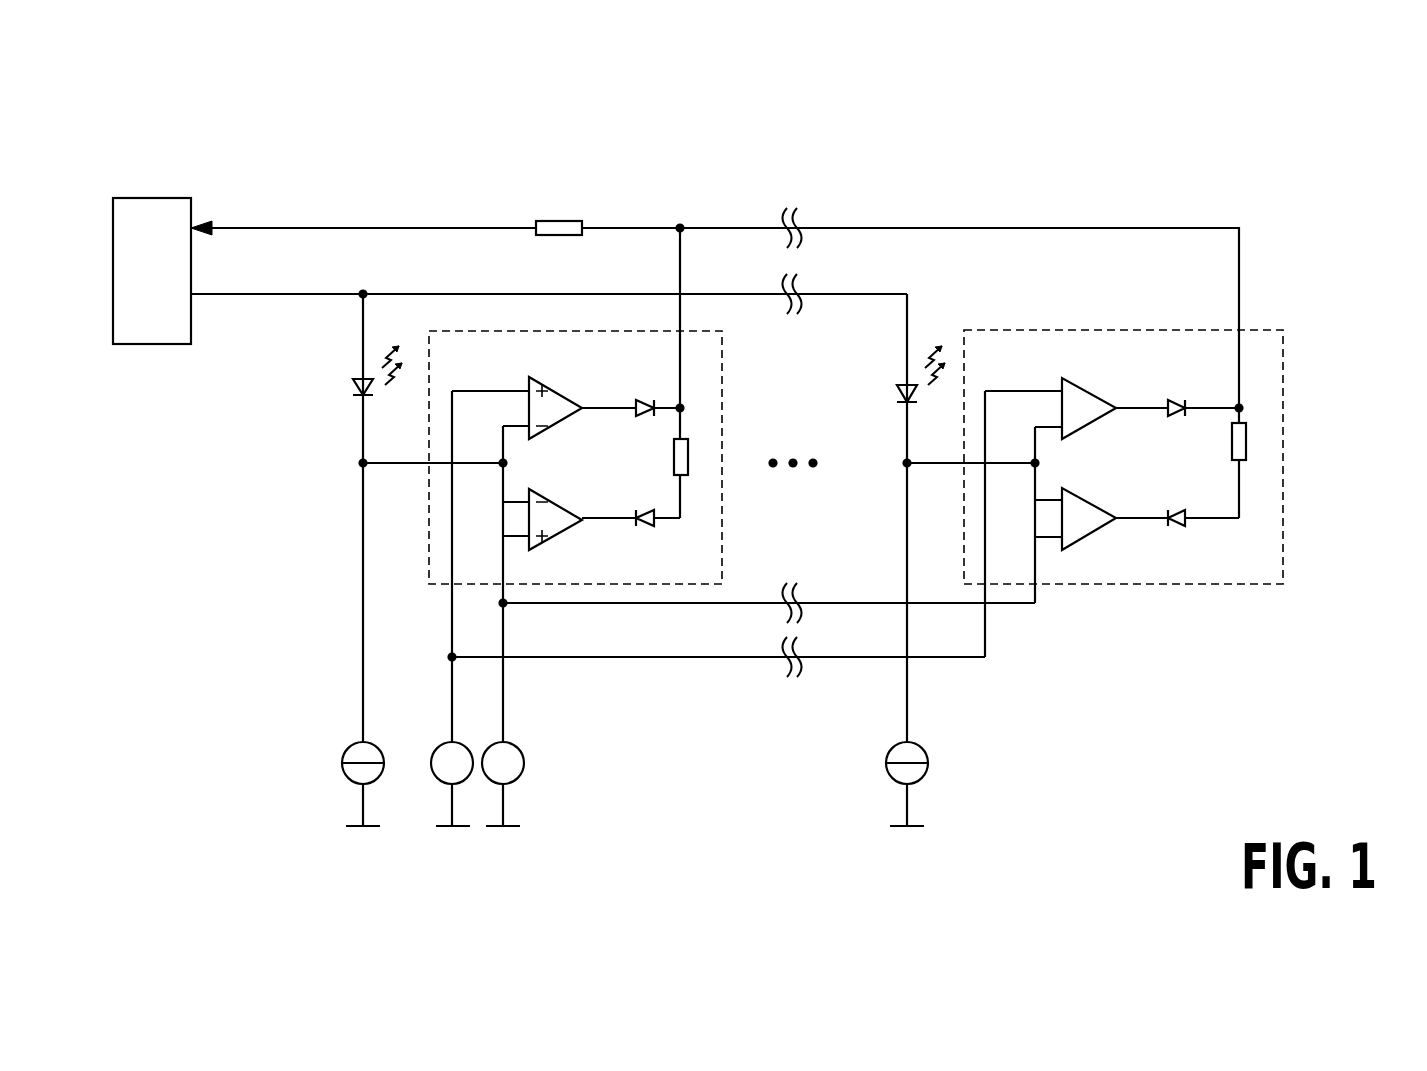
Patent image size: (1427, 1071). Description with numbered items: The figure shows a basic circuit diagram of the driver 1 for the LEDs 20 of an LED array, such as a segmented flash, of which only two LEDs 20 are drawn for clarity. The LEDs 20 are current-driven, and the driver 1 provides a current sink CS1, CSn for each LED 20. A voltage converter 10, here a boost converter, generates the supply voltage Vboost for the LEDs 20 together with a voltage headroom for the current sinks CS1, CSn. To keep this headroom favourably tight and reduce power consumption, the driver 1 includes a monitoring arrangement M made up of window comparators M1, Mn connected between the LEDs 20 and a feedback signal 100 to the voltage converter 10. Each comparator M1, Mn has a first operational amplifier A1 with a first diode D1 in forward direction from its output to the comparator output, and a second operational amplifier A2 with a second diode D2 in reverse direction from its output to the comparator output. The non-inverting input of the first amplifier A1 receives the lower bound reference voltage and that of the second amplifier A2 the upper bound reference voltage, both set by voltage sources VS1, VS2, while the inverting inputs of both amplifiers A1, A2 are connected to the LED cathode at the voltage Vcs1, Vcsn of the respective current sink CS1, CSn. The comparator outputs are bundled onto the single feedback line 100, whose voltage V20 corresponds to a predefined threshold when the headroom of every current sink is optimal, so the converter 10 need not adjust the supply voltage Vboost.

The driver 1 is at (1282, 196).
The voltage converter 10 is at (176, 198).
The LED 20 is at (355, 386).
The feedback signal 100 is at (478, 228).
The first operational amplifier A1 is at (557, 386).
The second operational amplifier A2 is at (557, 535).
The first diode D1 is at (648, 398).
The second diode D2 is at (645, 524).
The window comparator M1 is at (616, 457).
The window comparator Mn is at (1171, 493).
The monitoring arrangement M is at (1055, 652).
The current sink CS1 is at (346, 748).
The current sink CSn is at (924, 748).
The voltage source VS1 is at (438, 778).
The voltage source VS2 is at (518, 778).
The supply voltage Vboost is at (252, 293).
The feedback signal voltage V20 is at (683, 228).
The LED cathode voltage Vcs1 is at (363, 463).
The LED cathode voltage Vcsn is at (942, 457).